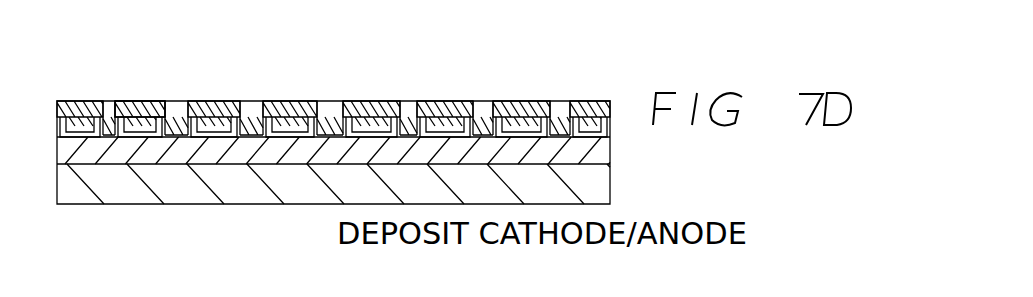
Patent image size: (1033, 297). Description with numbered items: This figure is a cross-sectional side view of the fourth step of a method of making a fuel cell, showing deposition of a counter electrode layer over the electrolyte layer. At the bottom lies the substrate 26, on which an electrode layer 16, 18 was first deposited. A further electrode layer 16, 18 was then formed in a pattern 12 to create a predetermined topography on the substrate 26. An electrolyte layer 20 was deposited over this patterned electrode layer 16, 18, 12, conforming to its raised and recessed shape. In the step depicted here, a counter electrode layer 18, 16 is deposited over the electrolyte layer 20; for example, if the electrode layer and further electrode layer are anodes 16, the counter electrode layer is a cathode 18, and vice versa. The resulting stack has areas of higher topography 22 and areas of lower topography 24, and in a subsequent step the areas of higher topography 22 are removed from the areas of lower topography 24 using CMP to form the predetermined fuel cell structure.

The pattern 12 is at (333, 87).
The anode 16 is at (72, 112).
The cathode 18 is at (249, 115).
The electrolyte layer 20 is at (168, 118).
The areas of higher topography 22 is at (622, 90).
The areas of lower topography 24 is at (624, 137).
The substrate 26 is at (222, 206).